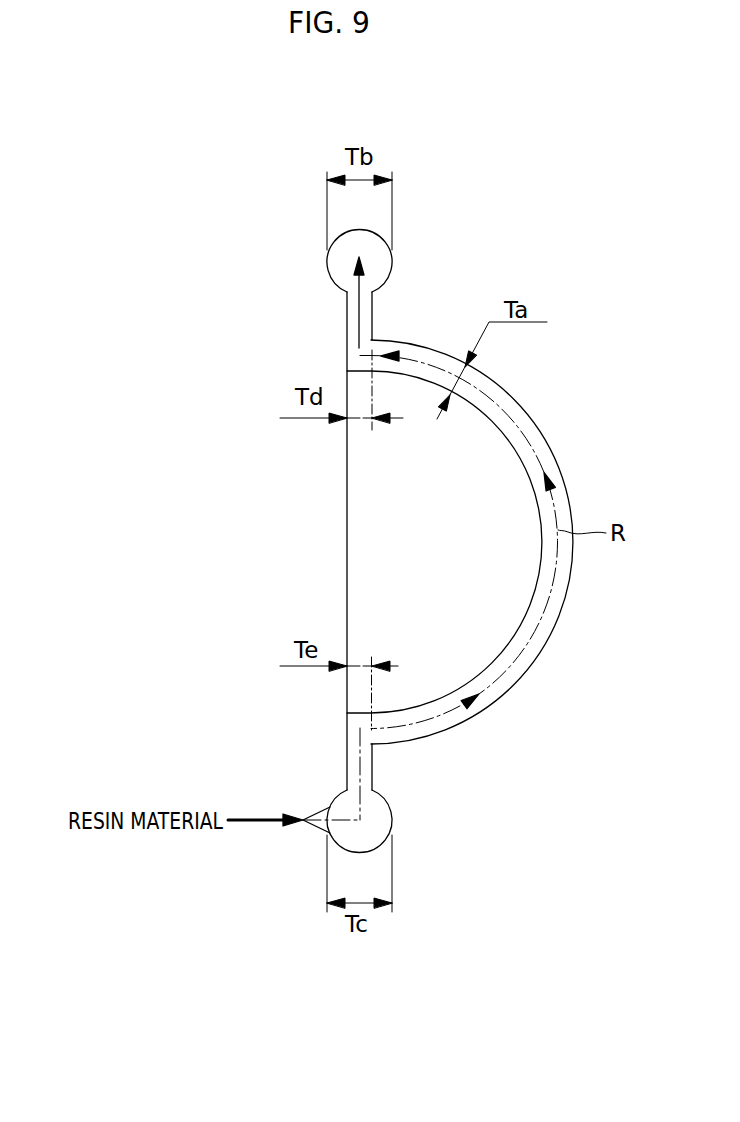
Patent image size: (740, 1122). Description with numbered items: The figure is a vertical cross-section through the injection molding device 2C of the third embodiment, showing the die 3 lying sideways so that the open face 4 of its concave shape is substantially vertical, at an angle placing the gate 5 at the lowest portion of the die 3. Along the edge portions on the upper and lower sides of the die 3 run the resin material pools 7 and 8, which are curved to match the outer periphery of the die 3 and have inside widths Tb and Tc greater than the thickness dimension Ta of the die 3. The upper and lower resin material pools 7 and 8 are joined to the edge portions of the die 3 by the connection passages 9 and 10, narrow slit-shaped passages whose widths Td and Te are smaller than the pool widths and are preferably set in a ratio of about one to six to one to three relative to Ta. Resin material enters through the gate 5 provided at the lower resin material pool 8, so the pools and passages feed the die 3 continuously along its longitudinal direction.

The injection molding device 2C is at (200, 315).
The die 3 is at (548, 442).
The open face 4 is at (347, 540).
The gate 5 is at (318, 812).
The resin material pool 7 is at (328, 260).
The resin material pool 8 is at (393, 820).
The connection passage 9 is at (347, 322).
The connection passage 10 is at (373, 765).